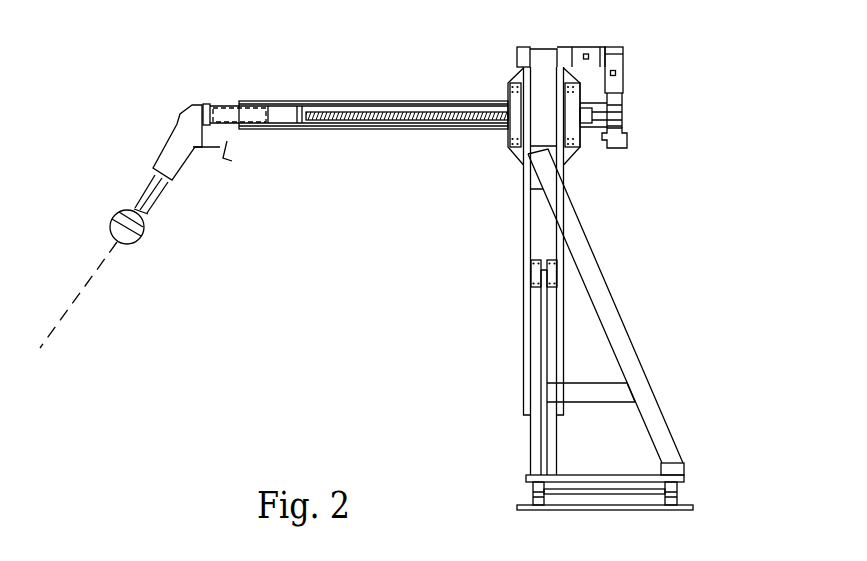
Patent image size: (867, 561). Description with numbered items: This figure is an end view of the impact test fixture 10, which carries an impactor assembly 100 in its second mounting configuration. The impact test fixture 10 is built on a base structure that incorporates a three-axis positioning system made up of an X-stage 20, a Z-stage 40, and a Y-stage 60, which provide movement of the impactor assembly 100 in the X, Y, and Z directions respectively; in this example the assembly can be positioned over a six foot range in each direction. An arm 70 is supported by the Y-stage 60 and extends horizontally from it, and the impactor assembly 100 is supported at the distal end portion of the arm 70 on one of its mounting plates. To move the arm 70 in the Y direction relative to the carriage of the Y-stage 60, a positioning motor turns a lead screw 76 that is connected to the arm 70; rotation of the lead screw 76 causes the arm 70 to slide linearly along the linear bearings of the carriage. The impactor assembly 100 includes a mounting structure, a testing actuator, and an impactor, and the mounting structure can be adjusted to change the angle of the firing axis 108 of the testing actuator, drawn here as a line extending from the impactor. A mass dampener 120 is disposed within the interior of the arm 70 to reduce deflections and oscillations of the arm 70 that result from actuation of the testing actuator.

The impact test fixture 10 is at (680, 97).
The X-stage 20 is at (693, 493).
The Z-stage 40 is at (683, 407).
The Y-stage 60 is at (498, 85).
The arm 70 is at (422, 122).
The lead screw 76 is at (332, 119).
The impactor assembly 100 is at (97, 172).
The firing axis 108 is at (50, 332).
The mass dampener 120 is at (235, 103).